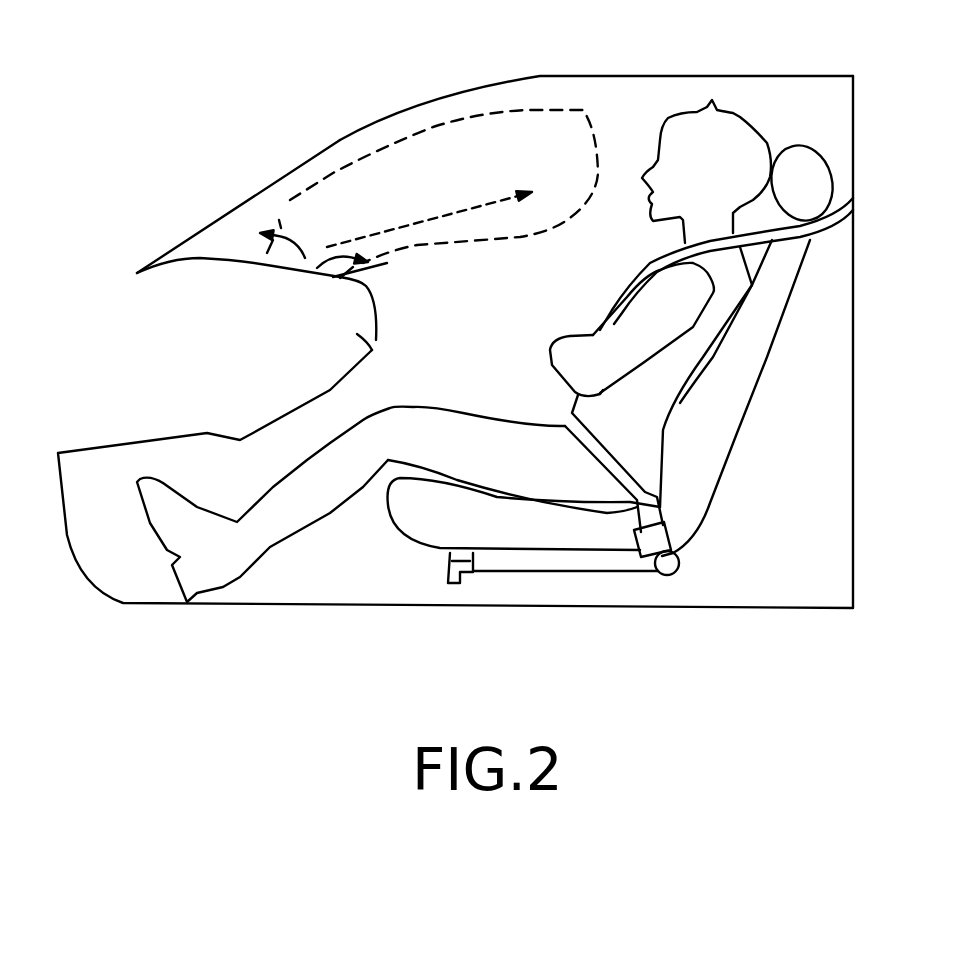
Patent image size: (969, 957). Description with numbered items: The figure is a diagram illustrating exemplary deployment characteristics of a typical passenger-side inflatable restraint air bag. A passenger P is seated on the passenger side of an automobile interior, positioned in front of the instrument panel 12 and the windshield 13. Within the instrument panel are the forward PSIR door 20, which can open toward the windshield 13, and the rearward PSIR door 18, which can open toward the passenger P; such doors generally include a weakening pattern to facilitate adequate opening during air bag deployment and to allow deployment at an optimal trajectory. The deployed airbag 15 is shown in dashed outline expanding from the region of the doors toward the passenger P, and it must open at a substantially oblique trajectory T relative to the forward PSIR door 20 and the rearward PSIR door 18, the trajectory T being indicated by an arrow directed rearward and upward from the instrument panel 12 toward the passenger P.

The instrument panel 12 is at (228, 243).
The windshield 13 is at (340, 140).
The deployed airbag 15 is at (590, 107).
The rearward PSIR door 18 is at (387, 263).
The forward PSIR door 20 is at (257, 263).
The trajectory T is at (429, 195).
The passenger P is at (673, 372).